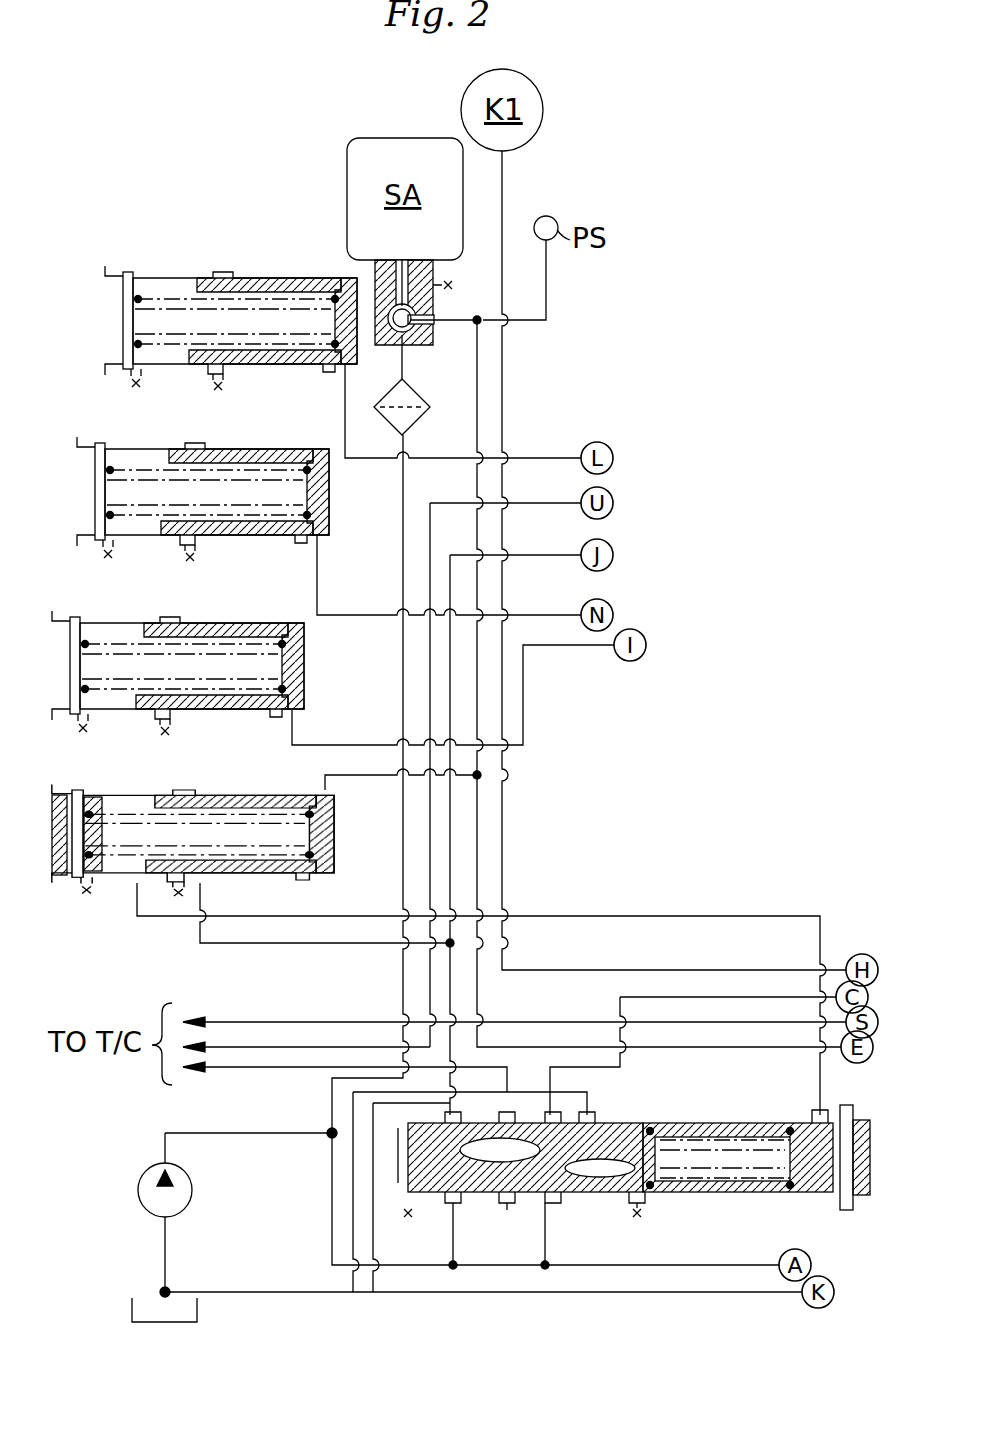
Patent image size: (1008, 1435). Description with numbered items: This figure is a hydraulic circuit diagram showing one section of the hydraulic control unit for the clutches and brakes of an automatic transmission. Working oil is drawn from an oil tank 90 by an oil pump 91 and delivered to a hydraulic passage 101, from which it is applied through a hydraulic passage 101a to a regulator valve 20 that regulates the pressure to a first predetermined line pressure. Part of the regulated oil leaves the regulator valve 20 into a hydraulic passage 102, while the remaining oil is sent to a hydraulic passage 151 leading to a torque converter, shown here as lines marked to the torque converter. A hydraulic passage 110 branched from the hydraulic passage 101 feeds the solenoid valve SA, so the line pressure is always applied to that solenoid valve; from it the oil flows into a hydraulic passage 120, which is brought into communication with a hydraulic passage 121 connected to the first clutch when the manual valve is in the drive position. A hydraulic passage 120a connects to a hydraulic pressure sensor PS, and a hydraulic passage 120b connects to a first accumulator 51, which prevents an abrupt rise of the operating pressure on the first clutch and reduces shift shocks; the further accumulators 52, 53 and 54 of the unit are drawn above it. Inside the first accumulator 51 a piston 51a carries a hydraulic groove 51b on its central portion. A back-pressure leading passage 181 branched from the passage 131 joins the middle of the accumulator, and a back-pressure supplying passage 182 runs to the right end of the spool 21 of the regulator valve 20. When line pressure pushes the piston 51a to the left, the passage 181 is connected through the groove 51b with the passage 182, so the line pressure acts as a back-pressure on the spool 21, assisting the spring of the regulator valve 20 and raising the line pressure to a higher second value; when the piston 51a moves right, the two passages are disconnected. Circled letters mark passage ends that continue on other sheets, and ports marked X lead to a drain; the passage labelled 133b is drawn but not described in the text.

The regulator valve 20 is at (650, 1102).
The spool 21 is at (748, 1195).
The first accumulator 51 is at (193, 833).
The piston 51a is at (285, 792).
The hydraulic groove 51b is at (240, 878).
The accumulator 52 is at (149, 616).
The accumulator 53 is at (171, 438).
The accumulator 54 is at (177, 260).
The oil tank 90 is at (150, 1292).
The oil pump 91 is at (192, 1196).
The hydraulic passage 101 is at (332, 1125).
The hydraulic passage 101a is at (499, 1236).
The hydraulic passage 102 is at (620, 997).
The hydraulic passage 110 is at (403, 990).
The hydraulic passage 120 is at (477, 410).
The hydraulic passage 120a is at (546, 294).
The hydraulic passage 120b is at (352, 778).
The hydraulic passage 121 is at (502, 358).
The passage 131 is at (530, 557).
The oil line 133b is at (540, 458).
The hydraulic passage 151 is at (230, 1068).
The back-pressure leading passage 181 is at (200, 950).
The back-pressure supplying passage 182 is at (595, 916).